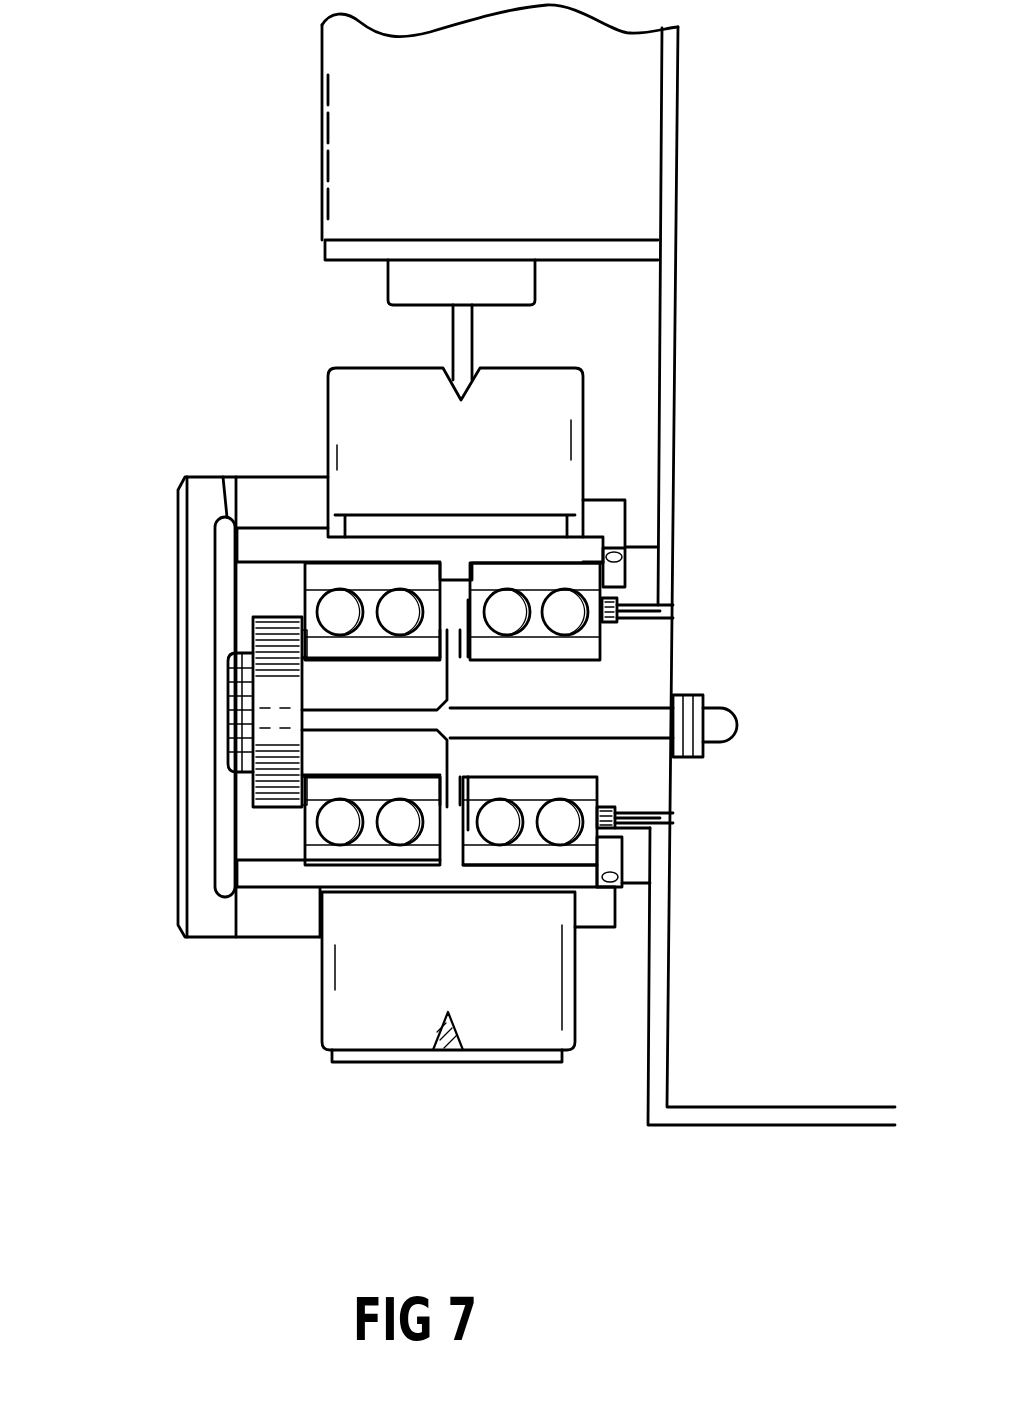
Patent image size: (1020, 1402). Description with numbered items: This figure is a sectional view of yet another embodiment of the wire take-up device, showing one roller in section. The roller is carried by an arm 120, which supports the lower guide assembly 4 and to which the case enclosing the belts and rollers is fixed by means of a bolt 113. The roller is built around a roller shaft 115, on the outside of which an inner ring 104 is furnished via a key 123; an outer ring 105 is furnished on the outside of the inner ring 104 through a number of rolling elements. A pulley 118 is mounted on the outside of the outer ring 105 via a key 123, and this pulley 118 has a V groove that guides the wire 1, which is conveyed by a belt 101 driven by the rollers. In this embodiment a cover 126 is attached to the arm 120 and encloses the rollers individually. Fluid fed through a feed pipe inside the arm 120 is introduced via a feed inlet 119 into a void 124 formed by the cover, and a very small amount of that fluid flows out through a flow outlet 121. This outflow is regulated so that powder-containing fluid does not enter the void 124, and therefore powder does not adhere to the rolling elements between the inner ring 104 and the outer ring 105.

The lower guide assembly 4 is at (323, 240).
The pulley 118 is at (333, 387).
The key 123 is at (515, 523).
The cover 126 is at (180, 592).
The void 124 is at (213, 632).
The flow outlet 121 is at (213, 917).
The outer ring 105 is at (300, 852).
The feed inlet 119 is at (602, 722).
The bolt 113 is at (633, 818).
The inner ring 104 is at (292, 783).
The roller shaft 115 is at (323, 750).
The belt 101 is at (367, 1057).
The wire 1 is at (455, 1055).
The arm 120 is at (762, 1070).